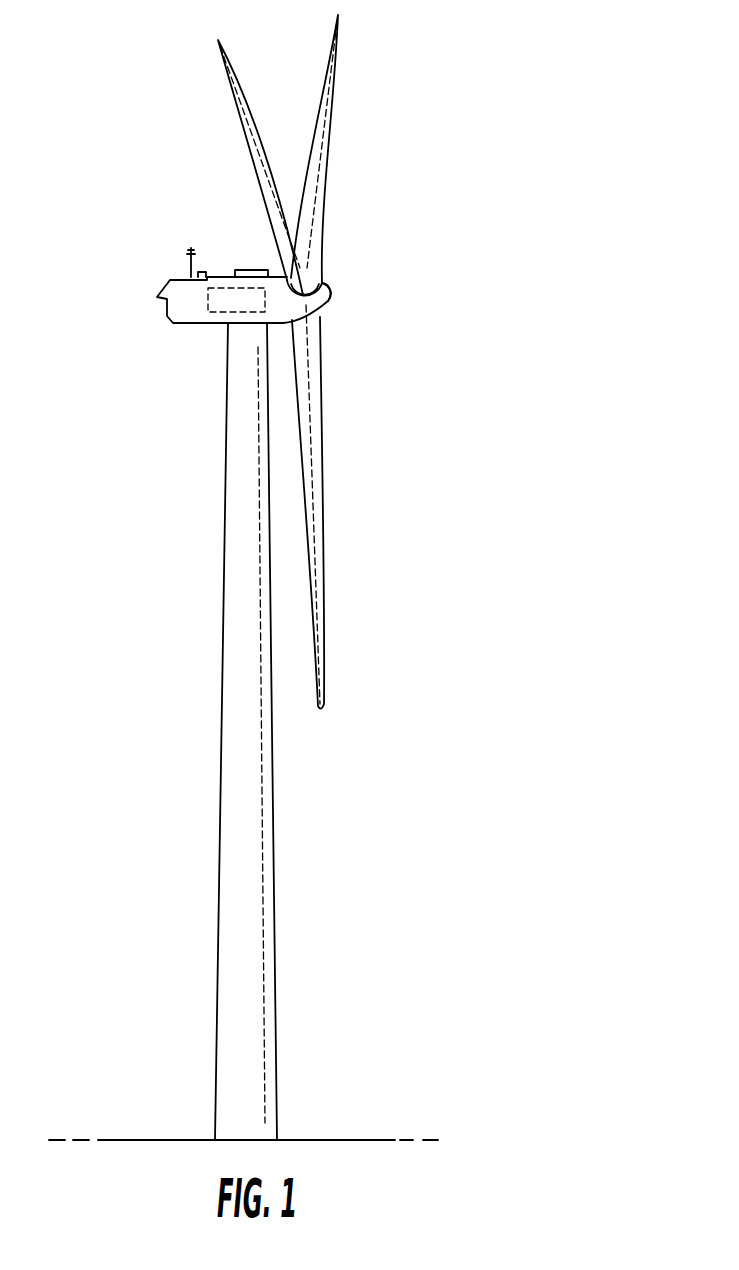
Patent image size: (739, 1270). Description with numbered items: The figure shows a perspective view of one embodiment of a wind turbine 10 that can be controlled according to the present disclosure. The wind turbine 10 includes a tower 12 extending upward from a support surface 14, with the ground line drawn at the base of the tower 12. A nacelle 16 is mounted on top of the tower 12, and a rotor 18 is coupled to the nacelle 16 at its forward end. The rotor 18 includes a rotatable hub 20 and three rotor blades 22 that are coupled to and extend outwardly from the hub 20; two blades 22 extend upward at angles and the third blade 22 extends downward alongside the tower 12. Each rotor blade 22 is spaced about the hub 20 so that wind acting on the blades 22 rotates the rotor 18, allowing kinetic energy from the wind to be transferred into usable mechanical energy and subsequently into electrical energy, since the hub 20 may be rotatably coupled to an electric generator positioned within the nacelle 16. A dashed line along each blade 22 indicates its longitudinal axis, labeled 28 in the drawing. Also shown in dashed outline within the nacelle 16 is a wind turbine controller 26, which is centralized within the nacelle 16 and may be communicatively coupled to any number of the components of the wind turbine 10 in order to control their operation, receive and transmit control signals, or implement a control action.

The wind turbine 10 is at (452, 192).
The tower 12 is at (250, 855).
The support surface 14 is at (186, 1140).
The nacelle 16 is at (197, 313).
The rotor 18 is at (339, 278).
The rotatable hub 20 is at (328, 298).
The rotor blade 22 is at (242, 97).
The wind turbine controller 26 is at (223, 287).
The pitch axis 28 is at (252, 152).